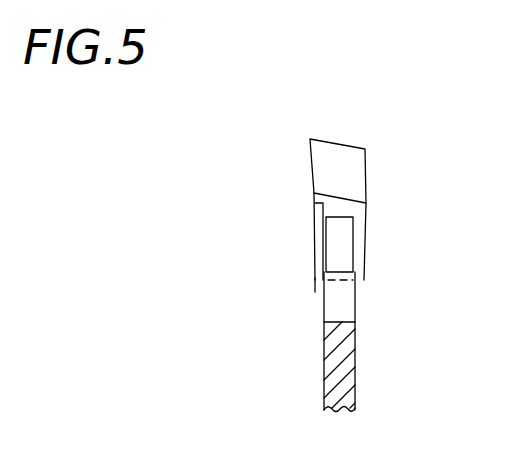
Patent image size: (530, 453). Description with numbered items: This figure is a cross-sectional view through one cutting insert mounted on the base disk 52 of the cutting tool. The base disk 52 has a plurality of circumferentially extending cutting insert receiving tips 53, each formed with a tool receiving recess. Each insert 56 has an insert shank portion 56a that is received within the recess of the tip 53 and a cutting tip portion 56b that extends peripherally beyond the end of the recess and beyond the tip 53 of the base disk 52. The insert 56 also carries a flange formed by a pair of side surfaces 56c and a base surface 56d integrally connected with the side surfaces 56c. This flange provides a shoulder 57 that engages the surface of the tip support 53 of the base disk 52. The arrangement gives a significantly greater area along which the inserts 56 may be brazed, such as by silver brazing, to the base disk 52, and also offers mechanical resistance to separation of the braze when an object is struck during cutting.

The base disk 52 is at (330, 373).
The cutting insert receiving tip 53 is at (345, 250).
The insert 56 is at (328, 181).
The insert shank portion 56a is at (357, 208).
The cutting tip portion 56b is at (345, 143).
The side surface 56c is at (315, 245).
The base surface 56d is at (315, 292).
The shoulder 57 is at (353, 279).